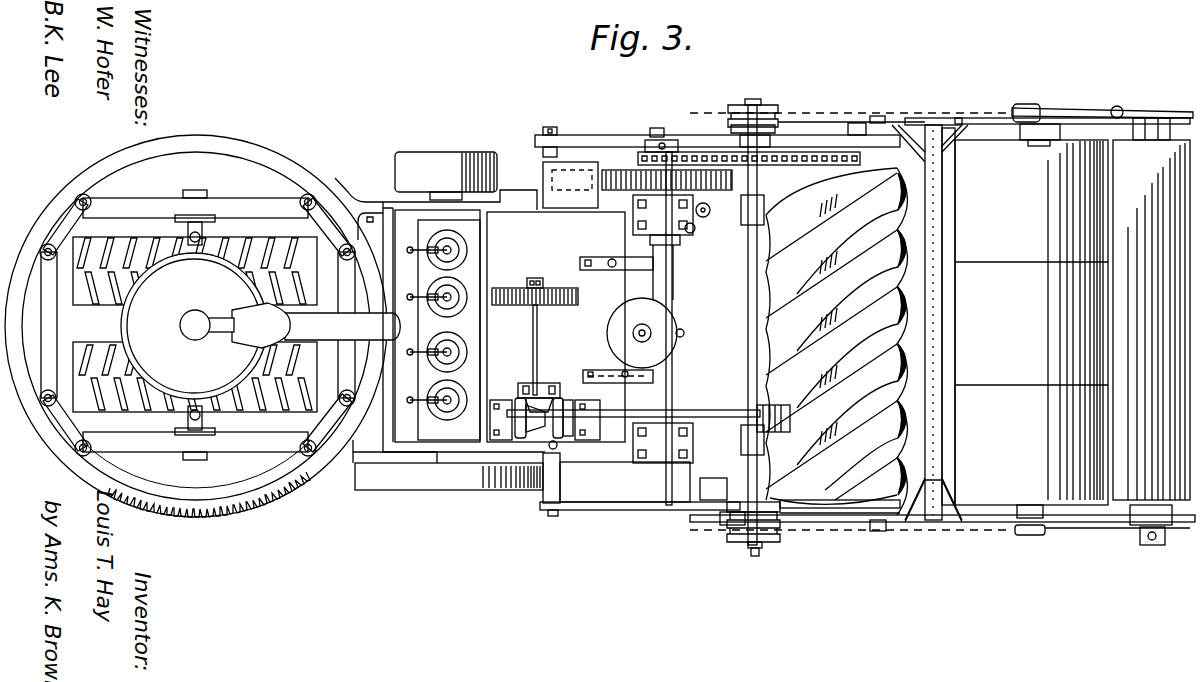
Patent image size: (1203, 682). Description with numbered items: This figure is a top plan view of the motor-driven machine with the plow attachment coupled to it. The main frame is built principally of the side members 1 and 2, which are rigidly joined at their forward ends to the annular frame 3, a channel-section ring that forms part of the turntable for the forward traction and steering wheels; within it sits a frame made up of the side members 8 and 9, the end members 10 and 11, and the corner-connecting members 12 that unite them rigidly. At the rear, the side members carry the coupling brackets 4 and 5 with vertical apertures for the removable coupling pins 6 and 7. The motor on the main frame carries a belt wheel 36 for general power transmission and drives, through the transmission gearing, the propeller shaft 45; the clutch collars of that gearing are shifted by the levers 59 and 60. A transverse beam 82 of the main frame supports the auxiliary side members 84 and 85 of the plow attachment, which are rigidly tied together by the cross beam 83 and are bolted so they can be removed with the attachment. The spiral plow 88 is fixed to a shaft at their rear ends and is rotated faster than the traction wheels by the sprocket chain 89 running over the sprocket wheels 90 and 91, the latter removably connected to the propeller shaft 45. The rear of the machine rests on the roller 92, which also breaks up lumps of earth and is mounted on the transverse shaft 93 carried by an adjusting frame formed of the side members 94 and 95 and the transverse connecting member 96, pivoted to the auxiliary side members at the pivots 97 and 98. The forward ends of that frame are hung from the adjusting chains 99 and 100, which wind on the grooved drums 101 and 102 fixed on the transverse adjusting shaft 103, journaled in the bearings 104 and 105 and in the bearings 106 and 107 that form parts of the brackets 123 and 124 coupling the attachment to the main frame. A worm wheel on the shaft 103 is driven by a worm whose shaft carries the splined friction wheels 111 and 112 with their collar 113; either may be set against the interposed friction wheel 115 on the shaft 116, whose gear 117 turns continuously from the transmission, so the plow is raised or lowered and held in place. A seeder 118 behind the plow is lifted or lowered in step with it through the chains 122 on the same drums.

The side member 1 is at (365, 203).
The side member 2 is at (383, 452).
The annular frame 3 is at (255, 152).
The coupling bracket 4 is at (708, 212).
The coupling bracket 5 is at (673, 478).
The coupling pin 6 is at (675, 270).
The coupling pin 7 is at (693, 412).
The side member 8 is at (122, 200).
The side member 9 is at (150, 452).
The end member 10 is at (114, 376).
The end member 11 is at (337, 372).
The corner-connecting members 12 is at (68, 218).
The belt wheel 36 is at (418, 160).
The propeller shaft 45 is at (658, 484).
The lever 59 is at (603, 257).
The lever 60 is at (614, 348).
The transverse beam 82 is at (516, 490).
The cross beam 83 is at (713, 503).
The auxiliary side member 84 is at (600, 140).
The auxiliary side member 85 is at (620, 510).
The spiral plow 88 is at (900, 355).
The sprocket chain 89 is at (712, 128).
The sprocket wheel 90 is at (856, 123).
The sprocket wheel 91 is at (678, 127).
The roller 92 is at (1031, 322).
The transverse shaft 93 is at (1040, 505).
The side member 94 is at (928, 120).
The side member 95 is at (925, 530).
The transverse connecting member 96 is at (935, 312).
The pivot 97 is at (895, 112).
The pivot 98 is at (878, 531).
The adjusting chain 99 is at (783, 127).
The adjusting chain 100 is at (730, 520).
The grooved drum 101 is at (762, 105).
The grooved drum 102 is at (757, 548).
The transverse adjusting shaft 103 is at (762, 253).
The bearing 104 is at (805, 118).
The bearing 105 is at (730, 522).
The bearing 106 is at (765, 207).
The bearing 107 is at (765, 438).
The friction wheel 111 is at (513, 395).
The friction wheel 112 is at (553, 392).
The collar 113 is at (610, 384).
The friction wheel 115 is at (532, 382).
The shaft 116 is at (540, 325).
The gear 117 is at (503, 292).
The seeder 118 is at (1158, 518).
The chains 122 is at (827, 535).
The bracket 123 is at (672, 246).
The bracket 124 is at (715, 495).